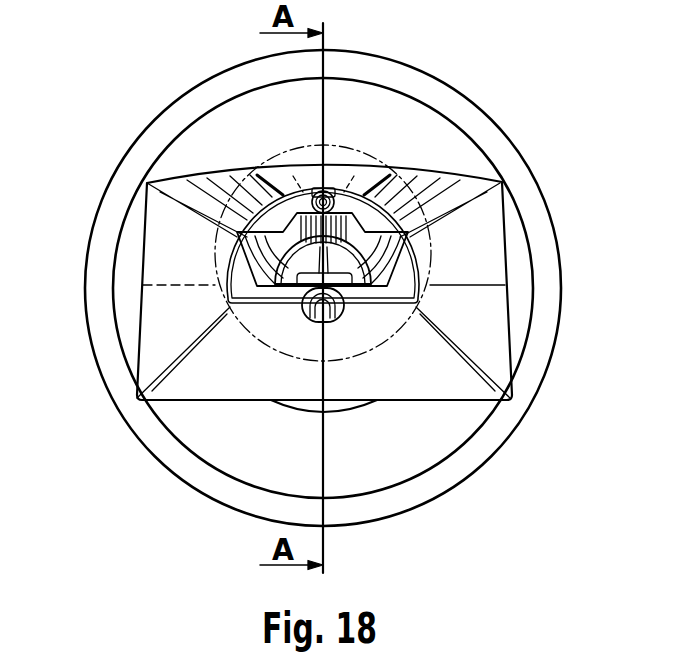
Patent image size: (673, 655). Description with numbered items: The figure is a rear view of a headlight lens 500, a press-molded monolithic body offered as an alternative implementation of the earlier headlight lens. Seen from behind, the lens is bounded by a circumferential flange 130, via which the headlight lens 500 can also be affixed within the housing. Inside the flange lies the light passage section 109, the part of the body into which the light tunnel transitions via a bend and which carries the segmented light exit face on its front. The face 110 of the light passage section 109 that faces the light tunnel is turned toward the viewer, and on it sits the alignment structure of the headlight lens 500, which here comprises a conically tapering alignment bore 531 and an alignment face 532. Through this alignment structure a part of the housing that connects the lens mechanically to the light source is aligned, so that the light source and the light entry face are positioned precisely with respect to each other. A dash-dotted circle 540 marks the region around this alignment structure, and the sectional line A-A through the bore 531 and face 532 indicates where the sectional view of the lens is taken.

The headlight lens 500 is at (508, 66).
The circumferential flange 130 is at (165, 127).
The light passage section 109 is at (170, 225).
The circular region 540 is at (210, 258).
The face of the light passage section 110 is at (250, 286).
The alignment bore 531 is at (333, 193).
The alignment face 532 is at (320, 312).